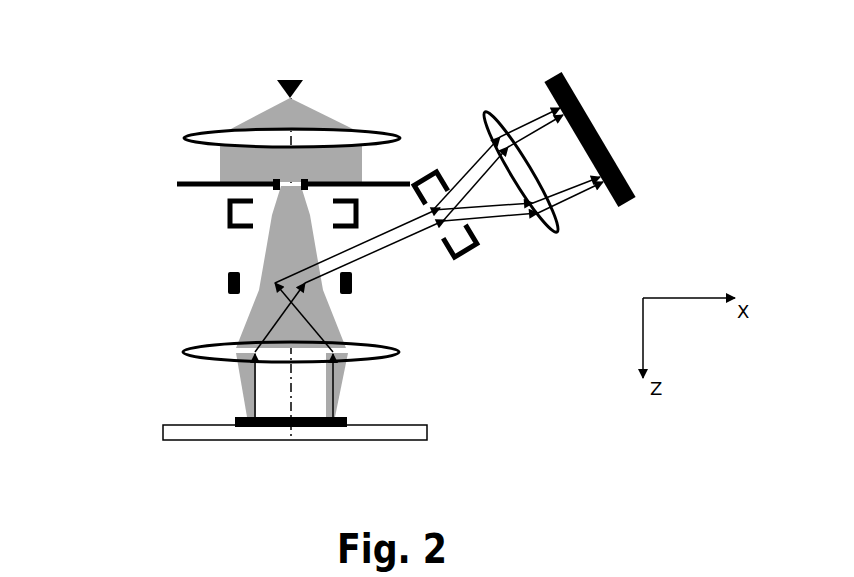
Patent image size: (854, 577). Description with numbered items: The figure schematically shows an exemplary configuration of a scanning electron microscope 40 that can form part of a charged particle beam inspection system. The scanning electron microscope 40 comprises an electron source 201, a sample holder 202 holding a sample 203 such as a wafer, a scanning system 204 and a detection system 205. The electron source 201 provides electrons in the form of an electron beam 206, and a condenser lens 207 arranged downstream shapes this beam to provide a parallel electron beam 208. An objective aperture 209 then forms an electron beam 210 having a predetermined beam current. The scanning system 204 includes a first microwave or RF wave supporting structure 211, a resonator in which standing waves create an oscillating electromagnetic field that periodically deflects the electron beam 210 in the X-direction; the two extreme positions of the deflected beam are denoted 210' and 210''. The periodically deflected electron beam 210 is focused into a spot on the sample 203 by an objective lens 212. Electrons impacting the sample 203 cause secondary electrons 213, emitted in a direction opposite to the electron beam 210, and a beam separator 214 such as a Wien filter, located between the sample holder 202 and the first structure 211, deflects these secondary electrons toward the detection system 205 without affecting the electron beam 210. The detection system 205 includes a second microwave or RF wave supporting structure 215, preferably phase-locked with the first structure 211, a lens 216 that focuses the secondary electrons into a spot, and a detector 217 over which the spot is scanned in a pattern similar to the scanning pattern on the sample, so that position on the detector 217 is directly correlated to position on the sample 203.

The scanning electron microscope 40 is at (177, 98).
The electron source 201 is at (291, 79).
The sample holder 202 is at (428, 432).
The sample 203 is at (245, 417).
The scanning system 204 is at (215, 217).
The detection system 205 is at (562, 251).
The electron beam 206 is at (313, 113).
The condenser lens 207 is at (185, 138).
The parallel electron beam 208 is at (242, 165).
The objective aperture 209 is at (177, 185).
The electron beam 210 is at (201, 212).
The extreme position of electron beam 210' is at (219, 301).
The extreme position of electron beam 210'' is at (356, 301).
The first microwave or RF wave supporting structure 211 is at (227, 228).
The objective lens 212 is at (399, 352).
The secondary electrons 213 is at (253, 387).
The beam separator 214 is at (355, 282).
The second microwave or RF wave supporting structure 215 is at (465, 252).
The lens 216 is at (487, 115).
The detector 217 is at (600, 132).